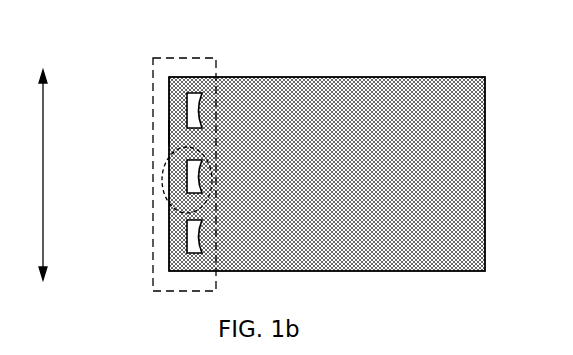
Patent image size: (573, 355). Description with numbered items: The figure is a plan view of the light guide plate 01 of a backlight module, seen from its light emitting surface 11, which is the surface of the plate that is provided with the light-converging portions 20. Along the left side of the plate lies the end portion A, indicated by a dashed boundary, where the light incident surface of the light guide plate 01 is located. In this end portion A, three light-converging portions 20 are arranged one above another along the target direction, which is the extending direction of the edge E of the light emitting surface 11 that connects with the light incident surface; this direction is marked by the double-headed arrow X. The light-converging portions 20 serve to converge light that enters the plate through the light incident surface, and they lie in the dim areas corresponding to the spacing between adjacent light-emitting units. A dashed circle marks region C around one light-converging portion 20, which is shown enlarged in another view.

The light guide plate 01 is at (481, 62).
The light emitting surface 11 is at (347, 90).
The light-converging portions 20 is at (195, 240).
The end portion A is at (153, 98).
The edge E is at (168, 134).
The region C is at (163, 166).
The direction X is at (38, 175).